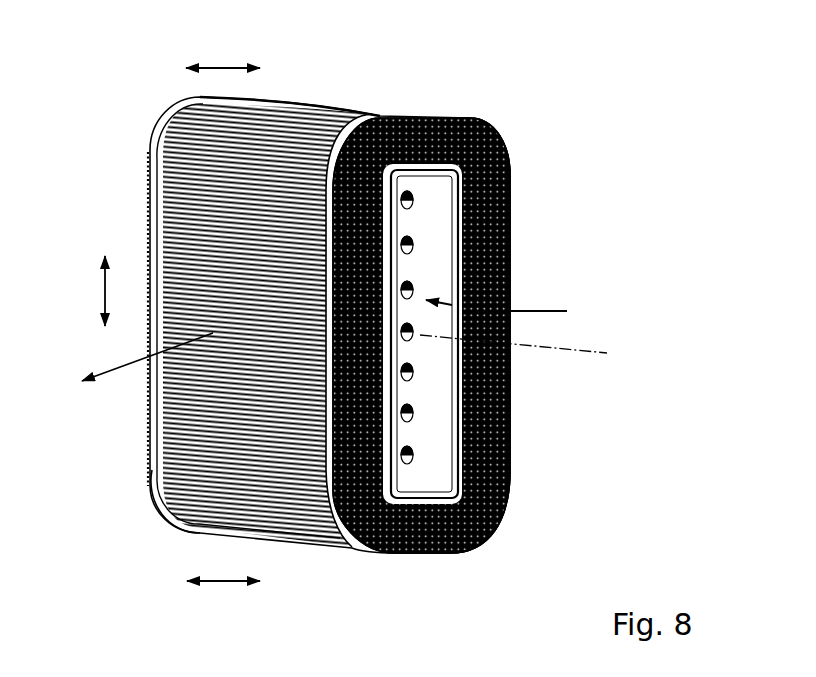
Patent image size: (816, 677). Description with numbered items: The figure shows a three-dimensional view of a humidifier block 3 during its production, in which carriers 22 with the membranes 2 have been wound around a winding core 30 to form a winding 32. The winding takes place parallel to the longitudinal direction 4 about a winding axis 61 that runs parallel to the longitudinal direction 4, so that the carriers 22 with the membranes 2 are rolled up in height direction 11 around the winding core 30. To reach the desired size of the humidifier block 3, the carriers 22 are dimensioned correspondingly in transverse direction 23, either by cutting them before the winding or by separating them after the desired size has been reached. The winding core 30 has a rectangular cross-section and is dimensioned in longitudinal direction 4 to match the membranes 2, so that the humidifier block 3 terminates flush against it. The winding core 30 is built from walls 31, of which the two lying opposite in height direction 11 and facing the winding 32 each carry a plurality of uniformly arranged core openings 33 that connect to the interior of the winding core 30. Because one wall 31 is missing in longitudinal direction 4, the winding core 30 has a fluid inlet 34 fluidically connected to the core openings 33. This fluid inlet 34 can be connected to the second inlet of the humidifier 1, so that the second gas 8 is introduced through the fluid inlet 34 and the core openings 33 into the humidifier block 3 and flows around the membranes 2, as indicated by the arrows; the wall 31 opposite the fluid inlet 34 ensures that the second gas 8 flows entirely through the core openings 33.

The humidifier 1 is at (610, 143).
The membranes 2 is at (157, 503).
The humidifier block 3 is at (176, 535).
The longitudinal direction 4 is at (222, 584).
The second gas 8 is at (103, 373).
The height direction 11 is at (222, 66).
The carriers 22 is at (150, 433).
The transverse direction 23 is at (103, 290).
The winding core 30 is at (510, 258).
The walls 31 is at (428, 116).
The winding 32 is at (140, 233).
The core openings 33 is at (412, 208).
The fluid inlet 34 is at (433, 452).
The winding axis 61 is at (585, 351).